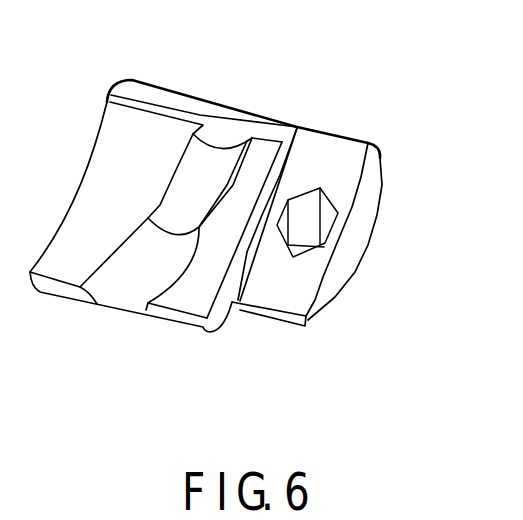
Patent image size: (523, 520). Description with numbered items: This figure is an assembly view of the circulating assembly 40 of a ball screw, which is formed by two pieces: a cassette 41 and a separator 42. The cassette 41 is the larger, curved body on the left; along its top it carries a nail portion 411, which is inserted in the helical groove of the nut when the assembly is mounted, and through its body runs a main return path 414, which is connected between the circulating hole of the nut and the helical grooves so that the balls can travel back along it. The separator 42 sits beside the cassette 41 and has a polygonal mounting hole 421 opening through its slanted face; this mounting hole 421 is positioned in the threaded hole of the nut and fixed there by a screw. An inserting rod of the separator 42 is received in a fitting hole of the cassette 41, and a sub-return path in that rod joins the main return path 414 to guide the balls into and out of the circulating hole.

The circulating assembly 40 is at (254, 197).
The cassette 41 is at (163, 197).
The nail portion 411 is at (206, 168).
The main return path 414 is at (143, 271).
The separator 42 is at (354, 251).
The mounting hole 421 is at (317, 218).